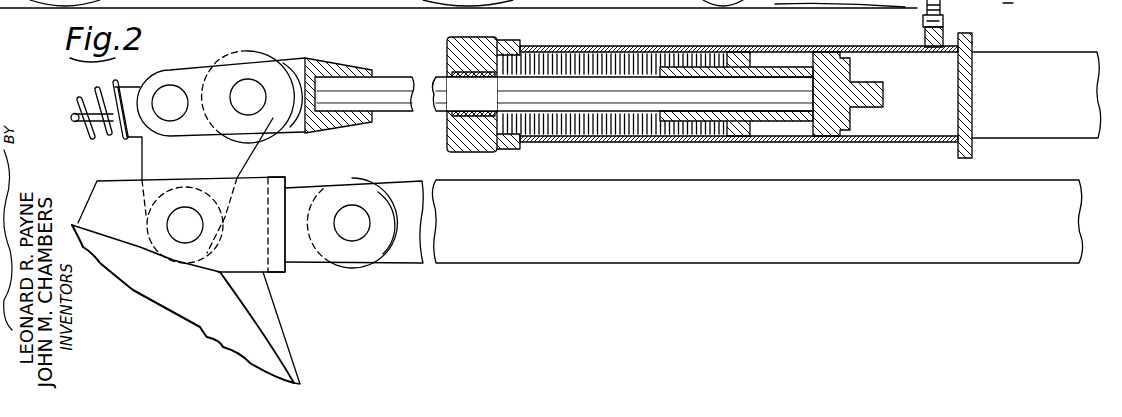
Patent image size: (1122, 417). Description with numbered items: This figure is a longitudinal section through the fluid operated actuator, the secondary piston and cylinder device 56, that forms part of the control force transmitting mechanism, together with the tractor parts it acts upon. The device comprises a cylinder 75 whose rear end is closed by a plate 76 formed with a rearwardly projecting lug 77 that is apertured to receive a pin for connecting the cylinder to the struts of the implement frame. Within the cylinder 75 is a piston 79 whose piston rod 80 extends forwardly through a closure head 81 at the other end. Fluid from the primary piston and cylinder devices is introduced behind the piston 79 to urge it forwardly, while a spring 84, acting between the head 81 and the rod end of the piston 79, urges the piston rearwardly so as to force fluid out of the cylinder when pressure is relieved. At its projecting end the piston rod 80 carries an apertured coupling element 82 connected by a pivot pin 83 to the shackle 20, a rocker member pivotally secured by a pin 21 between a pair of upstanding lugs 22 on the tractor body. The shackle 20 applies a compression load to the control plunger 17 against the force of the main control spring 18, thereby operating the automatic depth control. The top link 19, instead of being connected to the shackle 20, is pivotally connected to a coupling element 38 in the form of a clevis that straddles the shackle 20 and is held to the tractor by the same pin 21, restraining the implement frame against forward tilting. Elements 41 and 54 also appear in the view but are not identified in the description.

The control plunger 17 is at (75, 118).
The main control spring 18 is at (93, 138).
The top link 19 is at (730, 260).
The shackle 20 is at (243, 152).
The pin 21 is at (181, 233).
The upstanding lugs 22 is at (265, 300).
The coupling element 38 is at (280, 178).
The fitting 41 is at (862, 8).
The conduit 54 is at (1009, 4).
The secondary piston and cylinder device 56 is at (983, 44).
The cylinder 75 is at (697, 140).
The plate 76 is at (968, 145).
The lug 77 is at (1052, 55).
The piston 79 is at (823, 130).
The piston rod 80 is at (390, 112).
The closure head 81 is at (497, 38).
The coupling element 82 is at (327, 64).
The pivot pin 83 is at (249, 90).
The spring 84 is at (593, 140).